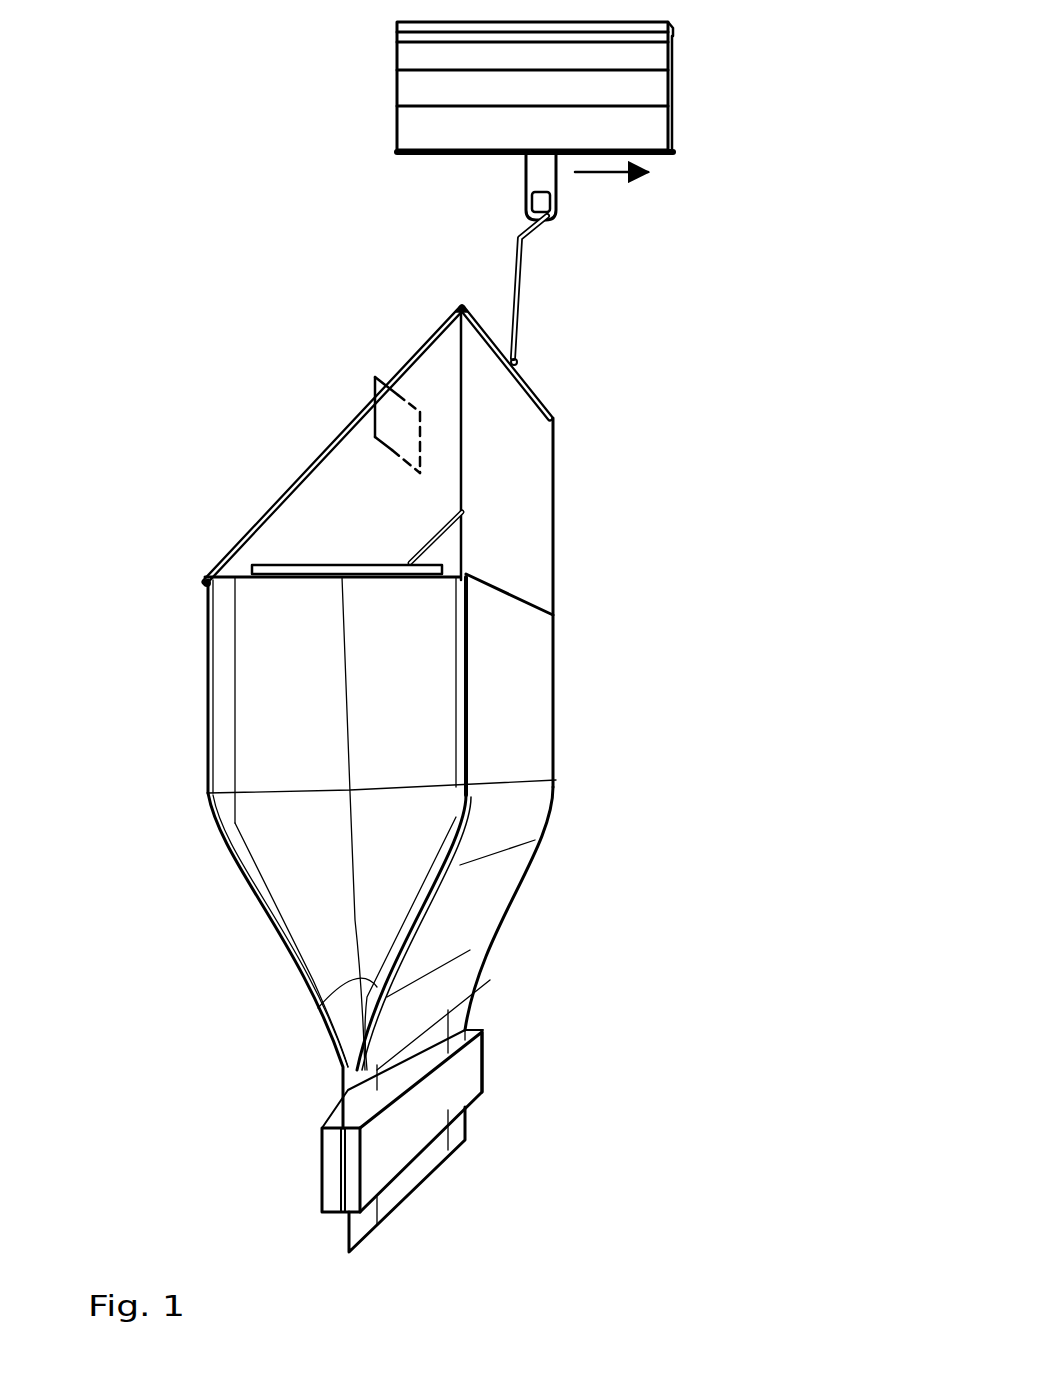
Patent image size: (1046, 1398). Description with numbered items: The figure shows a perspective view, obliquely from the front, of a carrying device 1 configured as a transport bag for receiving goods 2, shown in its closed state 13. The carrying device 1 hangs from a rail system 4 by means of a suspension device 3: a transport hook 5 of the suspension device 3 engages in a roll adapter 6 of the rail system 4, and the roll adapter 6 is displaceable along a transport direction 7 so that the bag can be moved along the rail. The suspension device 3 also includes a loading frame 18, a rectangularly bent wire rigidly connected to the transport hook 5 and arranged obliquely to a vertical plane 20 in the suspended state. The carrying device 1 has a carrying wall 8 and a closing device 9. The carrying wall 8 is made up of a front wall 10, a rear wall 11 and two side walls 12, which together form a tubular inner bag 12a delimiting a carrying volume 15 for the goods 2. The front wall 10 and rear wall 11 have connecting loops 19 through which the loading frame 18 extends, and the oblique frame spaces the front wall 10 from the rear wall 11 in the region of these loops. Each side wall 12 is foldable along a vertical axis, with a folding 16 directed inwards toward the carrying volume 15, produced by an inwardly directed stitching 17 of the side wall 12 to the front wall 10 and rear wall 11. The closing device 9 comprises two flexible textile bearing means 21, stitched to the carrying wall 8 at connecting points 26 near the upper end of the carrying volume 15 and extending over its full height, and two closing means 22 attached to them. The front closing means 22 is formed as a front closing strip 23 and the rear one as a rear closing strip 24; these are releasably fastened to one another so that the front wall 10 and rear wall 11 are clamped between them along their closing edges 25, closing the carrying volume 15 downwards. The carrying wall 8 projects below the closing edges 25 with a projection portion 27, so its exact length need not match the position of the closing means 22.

The carrying device 1 is at (196, 352).
The goods 2 is at (287, 565).
The suspension device 3 is at (526, 362).
The rail system 4 is at (652, 96).
The transport hook 5 is at (517, 263).
The roll adapter 6 is at (548, 184).
The transport direction 7 is at (600, 178).
The carrying wall 8 is at (565, 519).
The closing device 9 is at (495, 1082).
The front wall 10 is at (510, 462).
The rear wall 11 is at (287, 965).
The side walls 12 is at (267, 672).
The inner bag 12a is at (328, 977).
The closed state 13 is at (507, 1094).
The carrying volume 15 is at (326, 540).
The folding 16 is at (347, 862).
The stitching 17 is at (208, 737).
The loading frame 18 is at (357, 420).
The connecting loops 19 is at (205, 582).
The vertical plane 20 is at (383, 448).
The bearing means 21 is at (523, 710).
The closing means 22 is at (461, 1095).
The front closing strip 23 is at (472, 1057).
The rear closing strip 24 is at (332, 1153).
The closing edge 25 is at (447, 1027).
The connecting point 26 is at (207, 588).
The projection portion 27 is at (413, 1178).